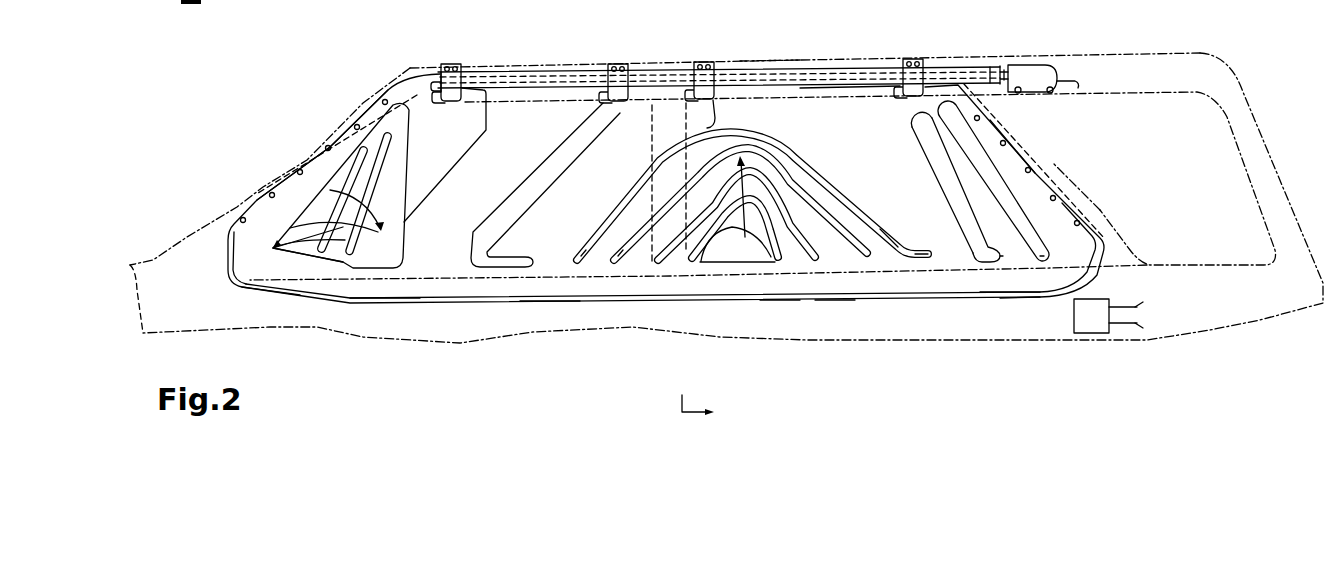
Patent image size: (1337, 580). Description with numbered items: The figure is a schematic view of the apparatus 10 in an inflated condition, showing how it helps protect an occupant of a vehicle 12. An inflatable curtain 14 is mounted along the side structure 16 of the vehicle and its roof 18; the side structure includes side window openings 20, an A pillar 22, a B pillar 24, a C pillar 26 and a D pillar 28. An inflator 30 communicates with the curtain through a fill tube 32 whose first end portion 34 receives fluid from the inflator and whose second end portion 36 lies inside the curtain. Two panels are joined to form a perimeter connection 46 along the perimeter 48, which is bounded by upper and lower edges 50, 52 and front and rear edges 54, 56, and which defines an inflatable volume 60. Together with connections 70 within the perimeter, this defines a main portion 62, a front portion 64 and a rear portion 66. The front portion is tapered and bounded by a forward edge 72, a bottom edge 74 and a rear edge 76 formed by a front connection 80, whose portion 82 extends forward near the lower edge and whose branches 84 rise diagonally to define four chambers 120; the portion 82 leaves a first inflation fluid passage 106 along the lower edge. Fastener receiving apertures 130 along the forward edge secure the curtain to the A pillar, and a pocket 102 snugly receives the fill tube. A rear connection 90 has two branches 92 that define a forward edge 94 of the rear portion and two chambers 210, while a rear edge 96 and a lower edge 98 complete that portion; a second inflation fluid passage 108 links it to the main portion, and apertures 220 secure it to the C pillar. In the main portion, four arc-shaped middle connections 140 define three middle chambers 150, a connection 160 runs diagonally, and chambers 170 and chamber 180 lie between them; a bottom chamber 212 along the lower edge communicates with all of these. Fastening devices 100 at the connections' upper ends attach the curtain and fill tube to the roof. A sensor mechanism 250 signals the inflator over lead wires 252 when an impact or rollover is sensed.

The apparatus 10 is at (375, 69).
The vehicle 12 is at (406, 47).
The inflatable curtain 14 is at (545, 120).
The side structure 16 is at (807, 323).
The roof 18 is at (771, 55).
The side window openings 20 is at (1200, 170).
The A pillar 22 is at (253, 192).
The B pillar 24 is at (668, 132).
The C pillar 26 is at (1047, 160).
The D pillar 28 is at (1240, 143).
The inflator 30 is at (1035, 70).
The fill tube 32 is at (1000, 72).
The first end portion 34 is at (1003, 70).
The second end portion 36 is at (477, 83).
The perimeter connection 46 is at (780, 300).
The perimeter 48 is at (832, 300).
The upper edge 50 is at (557, 67).
The lower edge 52 is at (547, 303).
The front edge 54 is at (230, 252).
The rear edge 56 is at (1045, 183).
The inflatable volume 60 is at (843, 117).
The main portion 62 is at (752, 324).
The front portion 64 is at (286, 310).
The rear portion 66 is at (1145, 288).
The connections 70 is at (443, 137).
The forward edge 72 is at (287, 187).
The bottom edge 74 is at (260, 290).
The rear edge 76 is at (407, 222).
The front connection 80 is at (420, 163).
The portion 82 is at (330, 257).
The branches 84 is at (287, 245).
The rear connection 90 is at (923, 160).
The branches 92 is at (987, 183).
The forward edge 94 is at (940, 190).
The rear edge 96 is at (1066, 210).
The lower edge 98 is at (1027, 299).
The fastening devices 100 is at (452, 66).
The pocket 102 is at (440, 80).
The first inflation fluid passage 106 is at (383, 287).
The second inflation fluid passage 108 is at (1002, 277).
The inflatable chambers 120 is at (311, 232).
The fastener receiving apertures 130 is at (331, 149).
The middle connections 140 is at (903, 257).
The middle chambers 150 is at (643, 243).
The connection 160 is at (535, 170).
The inflatable chambers 170 is at (523, 223).
The inflatable chamber 180 is at (913, 237).
The inflatable chambers 210 is at (1040, 250).
The bottom chamber 212 is at (697, 280).
The fastener receiving apertures 220 is at (1027, 170).
The sensor mechanism 250 is at (1087, 317).
The lead wires 252 is at (1057, 72).